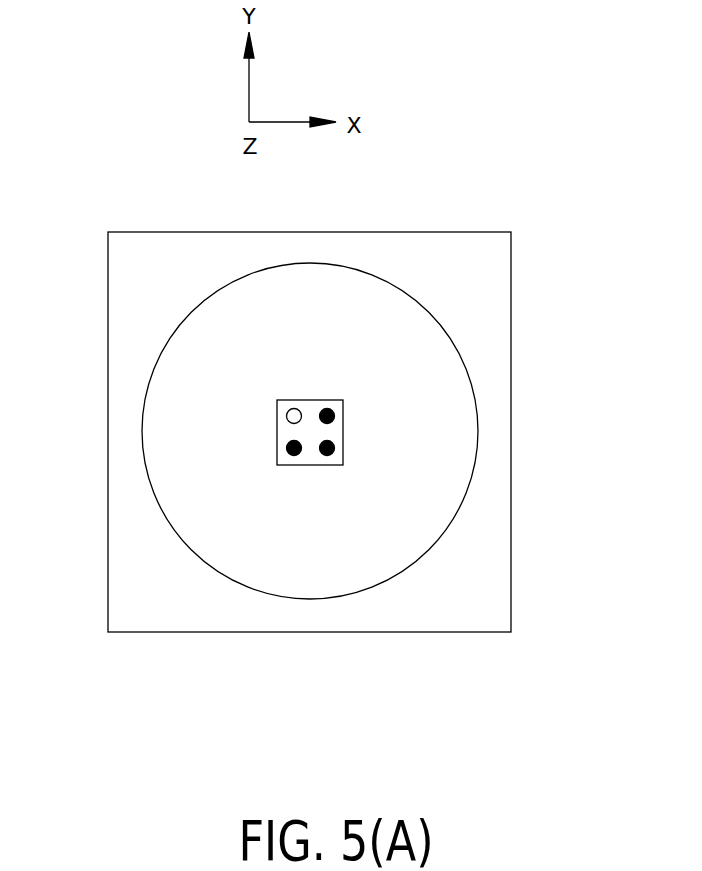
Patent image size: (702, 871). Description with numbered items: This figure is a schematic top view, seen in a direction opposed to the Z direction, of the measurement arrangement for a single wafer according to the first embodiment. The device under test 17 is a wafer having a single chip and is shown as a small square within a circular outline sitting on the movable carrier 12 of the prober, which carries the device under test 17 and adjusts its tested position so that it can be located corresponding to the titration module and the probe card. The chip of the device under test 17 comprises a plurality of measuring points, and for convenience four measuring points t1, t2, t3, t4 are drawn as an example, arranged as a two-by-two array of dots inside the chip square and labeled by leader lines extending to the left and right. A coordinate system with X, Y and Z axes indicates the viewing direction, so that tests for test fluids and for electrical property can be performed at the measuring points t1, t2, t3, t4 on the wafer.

The movable carrier 12 is at (397, 305).
The device under test 17 is at (318, 398).
The measuring point t1 is at (286, 417).
The measuring point t2 is at (290, 449).
The measuring point t3 is at (330, 414).
The measuring point t4 is at (330, 448).